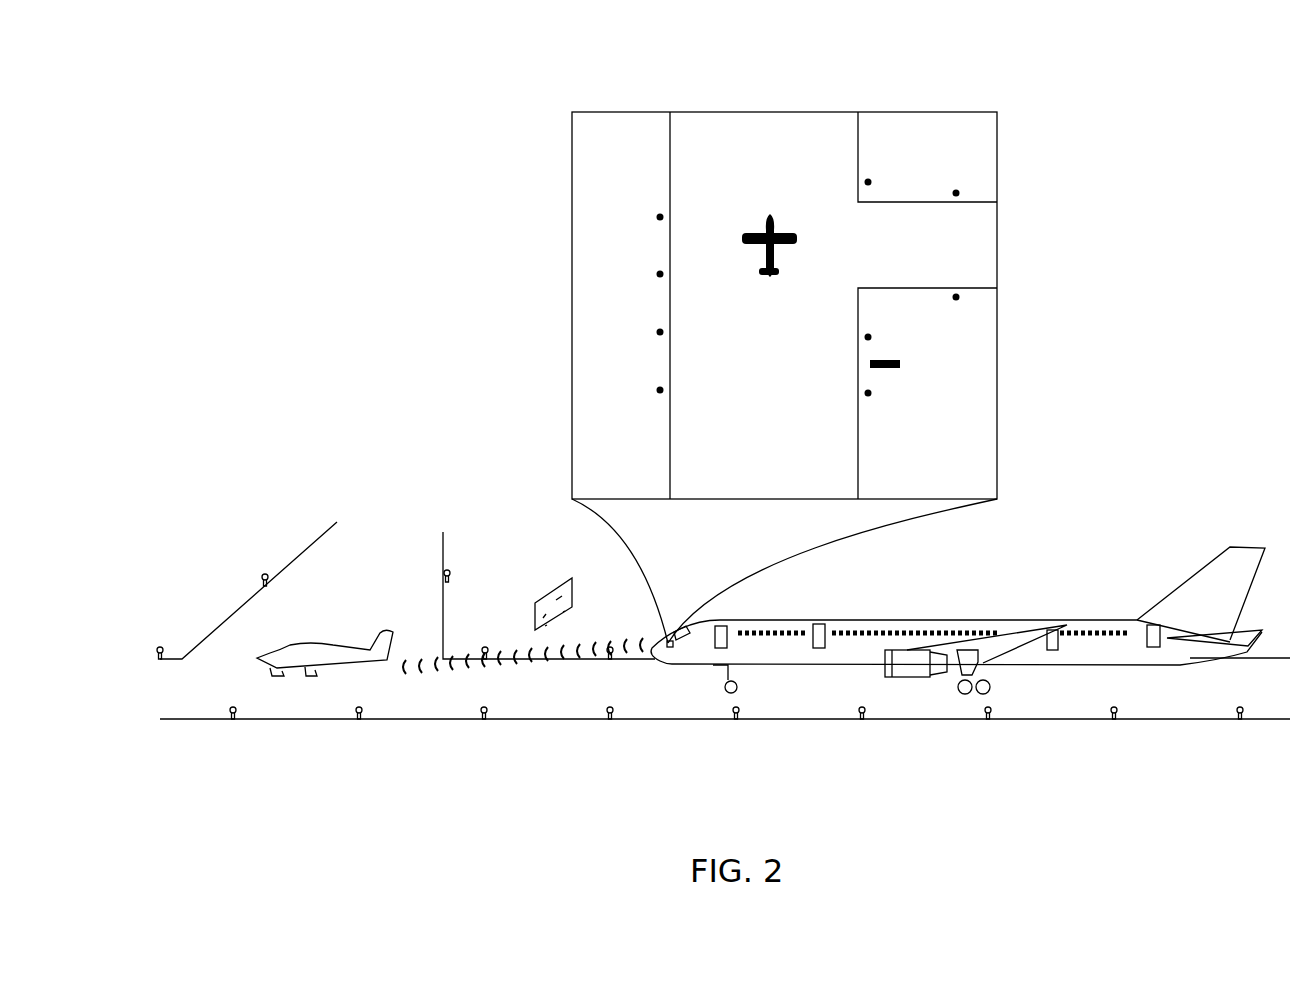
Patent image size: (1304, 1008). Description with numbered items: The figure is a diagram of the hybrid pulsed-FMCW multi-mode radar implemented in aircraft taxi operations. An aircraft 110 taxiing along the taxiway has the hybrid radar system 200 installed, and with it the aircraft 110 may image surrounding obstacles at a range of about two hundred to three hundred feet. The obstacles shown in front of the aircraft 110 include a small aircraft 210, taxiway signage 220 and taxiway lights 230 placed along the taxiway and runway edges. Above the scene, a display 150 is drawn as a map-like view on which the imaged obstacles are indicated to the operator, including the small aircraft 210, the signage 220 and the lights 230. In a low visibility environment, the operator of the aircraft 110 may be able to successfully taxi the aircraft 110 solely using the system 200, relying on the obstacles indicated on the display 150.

The aircraft 110 is at (1173, 587).
The display 150 is at (572, 190).
The system 200 is at (202, 143).
The small aircraft 210 is at (770, 215).
The taxiway signage 220 is at (900, 363).
The taxiway lights 230 is at (660, 332).